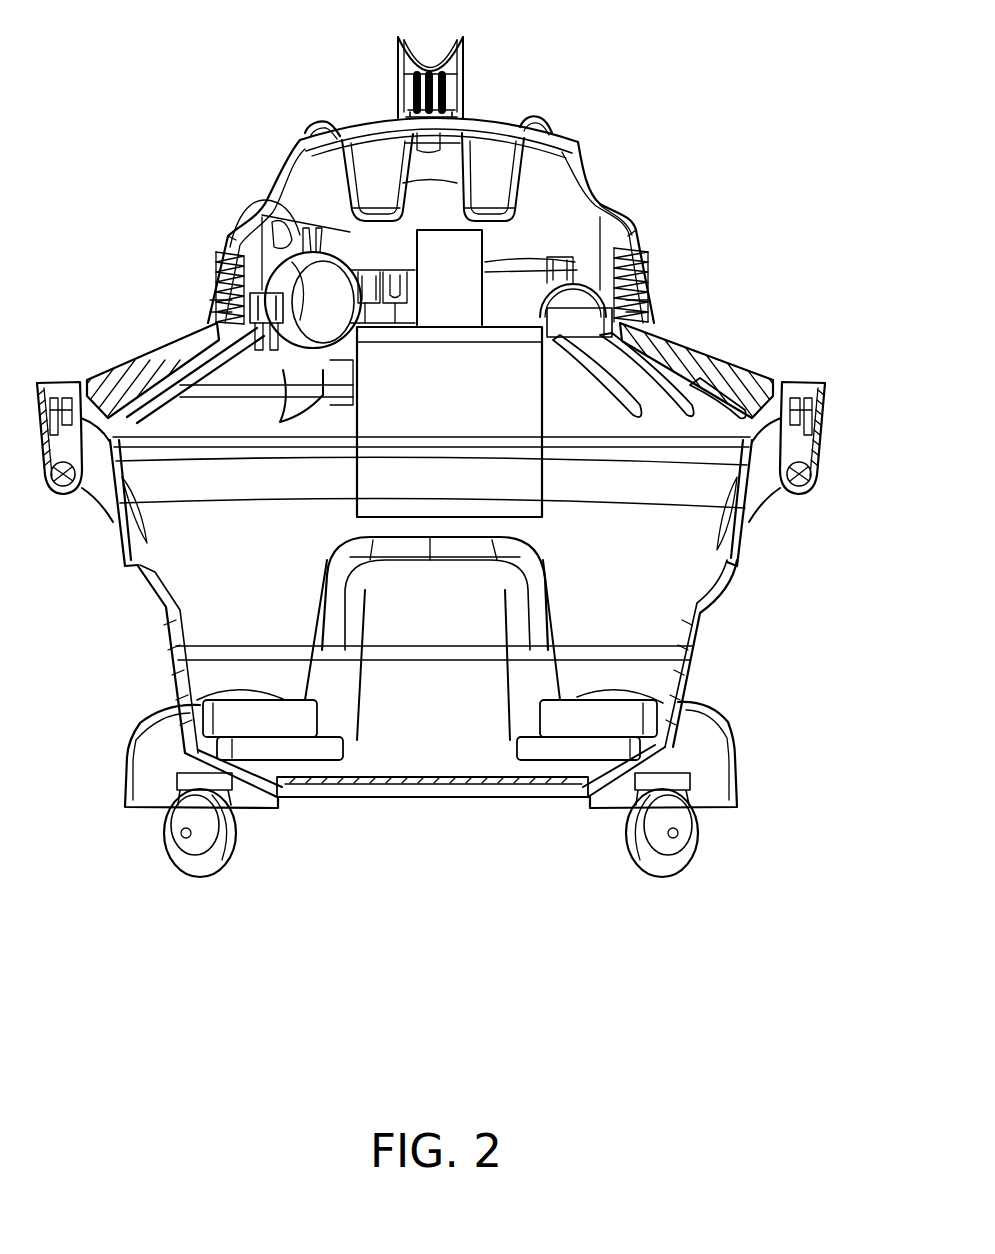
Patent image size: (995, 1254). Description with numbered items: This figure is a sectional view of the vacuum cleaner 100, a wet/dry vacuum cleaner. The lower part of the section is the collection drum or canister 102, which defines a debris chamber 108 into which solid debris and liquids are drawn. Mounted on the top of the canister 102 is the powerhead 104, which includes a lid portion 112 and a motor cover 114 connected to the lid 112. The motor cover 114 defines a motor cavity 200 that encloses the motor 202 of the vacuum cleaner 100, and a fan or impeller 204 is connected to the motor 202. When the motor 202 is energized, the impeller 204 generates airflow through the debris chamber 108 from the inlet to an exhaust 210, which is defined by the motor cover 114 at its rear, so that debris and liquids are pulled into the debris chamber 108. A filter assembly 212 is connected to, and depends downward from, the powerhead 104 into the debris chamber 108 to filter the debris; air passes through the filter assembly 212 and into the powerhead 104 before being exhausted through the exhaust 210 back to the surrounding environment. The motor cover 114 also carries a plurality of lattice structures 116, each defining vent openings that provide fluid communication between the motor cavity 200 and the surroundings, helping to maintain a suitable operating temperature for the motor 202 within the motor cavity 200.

The vacuum cleaner 100 is at (251, 107).
The canister 102 is at (168, 652).
The powerhead 104 is at (301, 117).
The debris chamber 108 is at (217, 566).
The lid portion 112 is at (770, 385).
The motor cover 114 is at (555, 128).
The lattice structures 116 is at (207, 264).
The motor cavity 200 is at (432, 198).
The motor 202 is at (398, 246).
The impeller 204 is at (215, 327).
The exhaust 210 is at (215, 283).
The filter assembly 212 is at (460, 438).